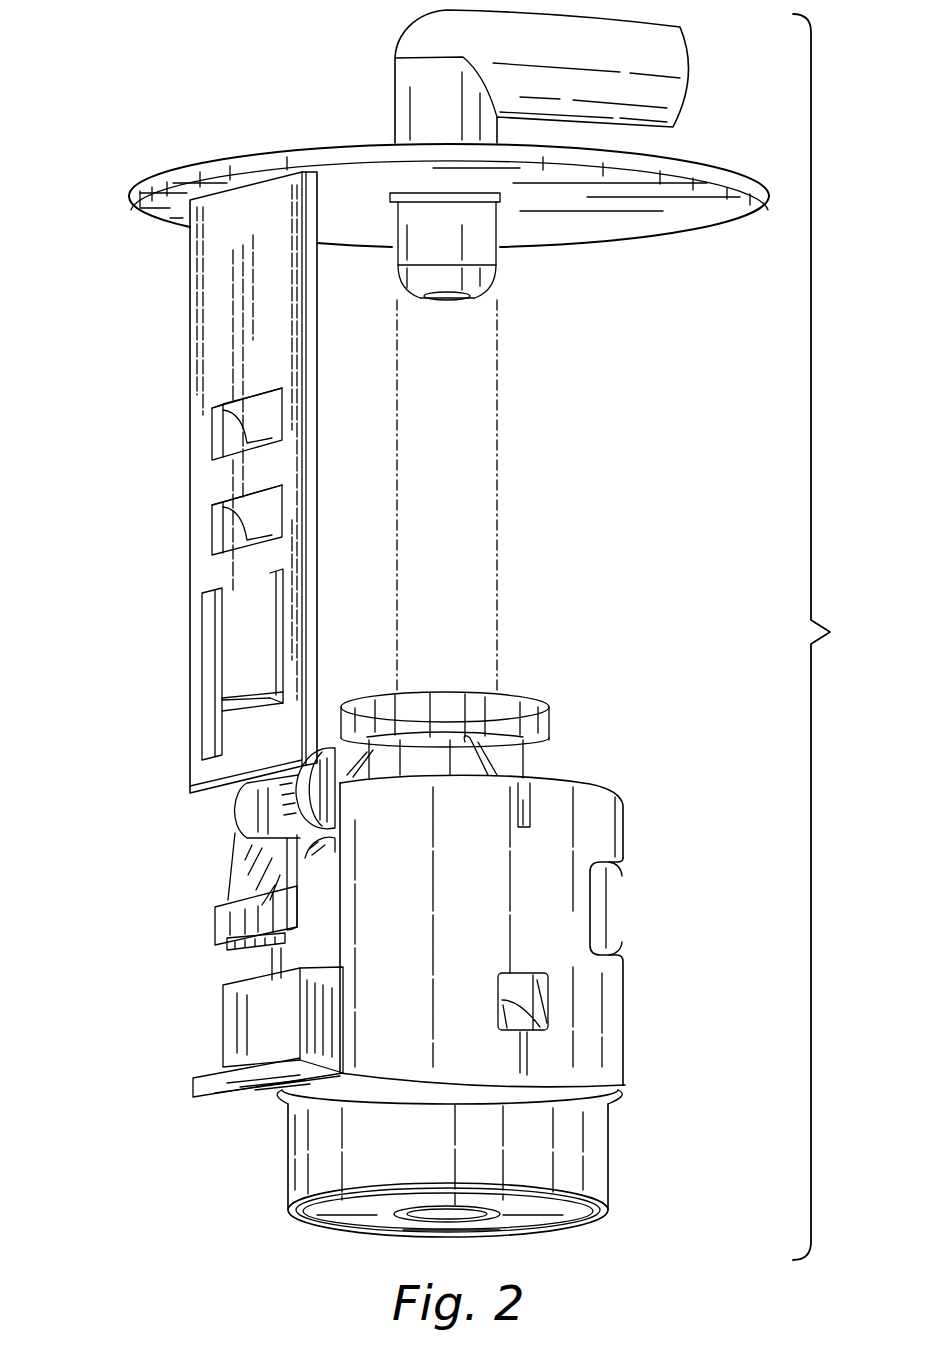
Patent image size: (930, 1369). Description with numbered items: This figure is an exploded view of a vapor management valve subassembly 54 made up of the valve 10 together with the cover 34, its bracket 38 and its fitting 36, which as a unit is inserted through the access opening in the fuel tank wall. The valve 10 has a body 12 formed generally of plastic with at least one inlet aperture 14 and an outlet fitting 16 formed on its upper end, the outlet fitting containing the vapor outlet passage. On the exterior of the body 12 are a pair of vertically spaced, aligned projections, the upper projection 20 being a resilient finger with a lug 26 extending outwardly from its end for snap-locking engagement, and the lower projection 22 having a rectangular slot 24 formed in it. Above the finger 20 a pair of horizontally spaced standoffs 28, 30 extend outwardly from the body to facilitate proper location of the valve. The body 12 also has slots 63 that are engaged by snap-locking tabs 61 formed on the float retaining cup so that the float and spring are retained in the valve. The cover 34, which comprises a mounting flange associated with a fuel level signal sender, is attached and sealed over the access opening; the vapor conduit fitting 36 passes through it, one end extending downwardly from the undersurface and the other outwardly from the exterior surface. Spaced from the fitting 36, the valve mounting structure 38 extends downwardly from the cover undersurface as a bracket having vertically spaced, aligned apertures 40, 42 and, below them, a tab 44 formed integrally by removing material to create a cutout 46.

The vapor management valve 10 is at (655, 1115).
The valve body 12 is at (612, 829).
The inlet aperture 14 is at (597, 911).
The outlet fitting 16 is at (515, 760).
The upper projection 20 is at (250, 868).
The lower projection 22 is at (247, 1031).
The rectangular slot 24 is at (242, 1098).
The lug 26 is at (222, 925).
The standoff 28 is at (250, 806).
The standoff 30 is at (337, 747).
The cover 34 is at (246, 152).
The fitting 36 is at (453, 233).
The valve mounting structure 38 is at (197, 323).
The aperture 40 is at (225, 412).
The aperture 42 is at (225, 510).
The tab 44 is at (262, 707).
The cutout 46 is at (260, 742).
The subassembly 54 is at (828, 637).
The snap-locking tab 61 is at (548, 998).
The slot 63 is at (545, 1028).